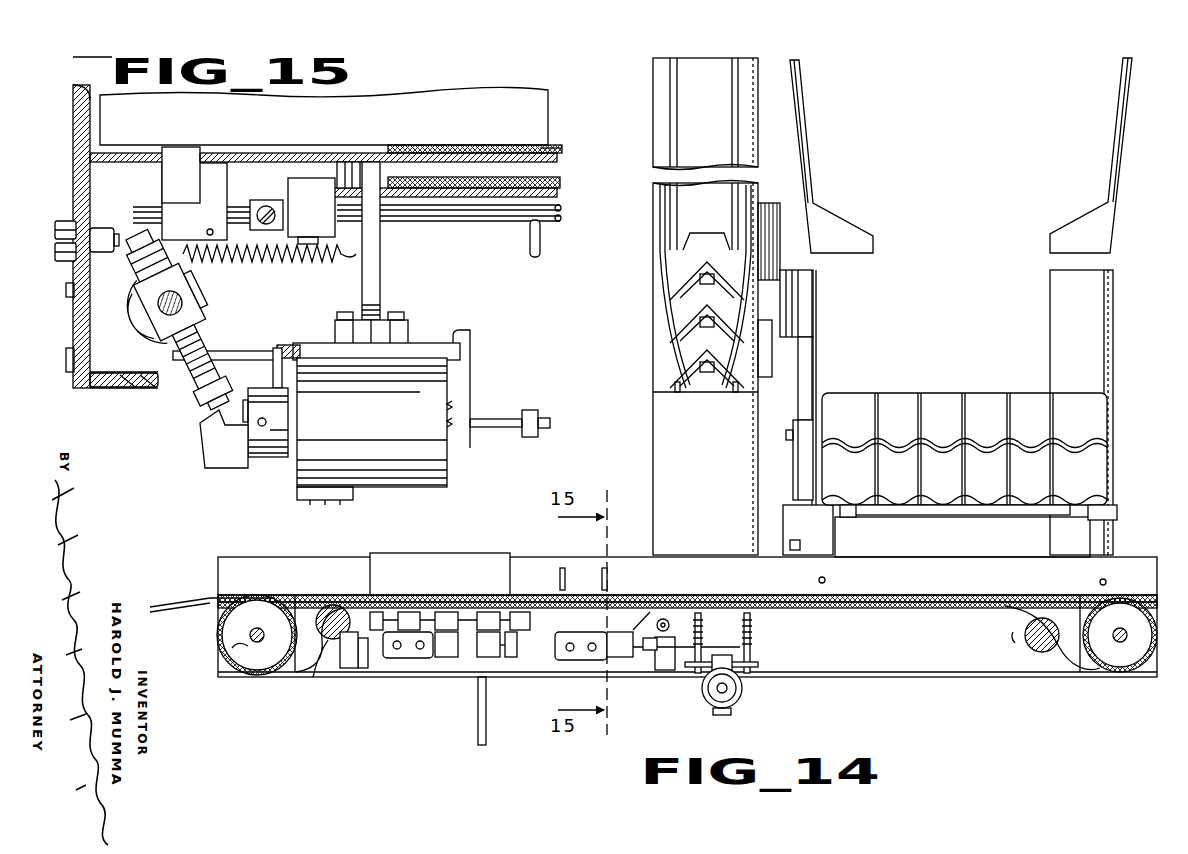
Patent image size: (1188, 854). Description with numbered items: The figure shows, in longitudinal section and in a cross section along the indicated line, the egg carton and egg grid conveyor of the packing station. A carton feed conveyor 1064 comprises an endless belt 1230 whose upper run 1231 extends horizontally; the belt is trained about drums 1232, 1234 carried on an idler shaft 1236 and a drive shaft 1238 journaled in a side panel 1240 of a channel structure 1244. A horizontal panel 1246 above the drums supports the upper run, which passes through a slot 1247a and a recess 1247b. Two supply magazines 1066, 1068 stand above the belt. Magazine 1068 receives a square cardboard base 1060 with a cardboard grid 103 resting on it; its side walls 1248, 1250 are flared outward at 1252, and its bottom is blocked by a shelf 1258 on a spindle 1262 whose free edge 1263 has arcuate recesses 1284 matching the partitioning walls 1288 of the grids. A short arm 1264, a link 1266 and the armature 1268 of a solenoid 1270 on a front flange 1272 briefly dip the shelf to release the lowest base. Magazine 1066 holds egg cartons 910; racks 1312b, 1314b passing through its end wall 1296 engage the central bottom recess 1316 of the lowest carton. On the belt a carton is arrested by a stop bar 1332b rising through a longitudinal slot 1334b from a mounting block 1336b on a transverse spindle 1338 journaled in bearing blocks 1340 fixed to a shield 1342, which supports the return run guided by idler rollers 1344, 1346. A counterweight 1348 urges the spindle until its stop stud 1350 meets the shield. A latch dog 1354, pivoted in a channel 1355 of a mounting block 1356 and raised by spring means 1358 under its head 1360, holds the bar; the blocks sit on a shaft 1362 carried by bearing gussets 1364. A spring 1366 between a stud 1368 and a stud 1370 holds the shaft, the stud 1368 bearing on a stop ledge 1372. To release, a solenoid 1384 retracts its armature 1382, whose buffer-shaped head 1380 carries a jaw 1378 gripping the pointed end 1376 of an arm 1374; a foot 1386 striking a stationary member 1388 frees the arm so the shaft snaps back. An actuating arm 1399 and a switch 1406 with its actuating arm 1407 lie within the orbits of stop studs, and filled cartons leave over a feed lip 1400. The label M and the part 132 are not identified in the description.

In FIG. 14, the cardboard grid 103 is at (932, 465).
In FIG. 15, the conveyor frame 132 is at (516, 103).
In FIG. 14, the conveyor frame 132 is at (290, 682).
In FIG. 15, the egg carton 910 is at (326, 114).
In FIG. 14, the egg carton 910 is at (670, 252).
In FIG. 14, the cardboard base 1060 is at (1040, 462).
In FIG. 15, the carton feed conveyor 1064 is at (560, 158).
In FIG. 14, the carton feed conveyor 1064 is at (337, 600).
In FIG. 14, the supply magazine 1066 is at (655, 232).
In FIG. 14, the supply magazine 1068 is at (1075, 284).
In FIG. 15, the endless belt 1230 is at (542, 148).
In FIG. 14, the endless belt 1230 is at (225, 622).
In FIG. 15, the upper run 1231 is at (480, 150).
In FIG. 14, the upper run 1231 is at (342, 594).
In FIG. 14, the drum 1232 is at (1140, 650).
In FIG. 14, the drum 1234 is at (238, 655).
In FIG. 14, the idler shaft 1236 is at (1118, 642).
In FIG. 14, the drive shaft 1238 is at (250, 636).
In FIG. 15, the side panel 1240 is at (80, 328).
In FIG. 14, the side panel 1240 is at (952, 655).
In FIG. 15, the channel structure 1244 is at (86, 382).
In FIG. 14, the channel structure 1244 is at (990, 676).
In FIG. 15, the horizontal panel 1246 is at (302, 158).
In FIG. 14, the horizontal panel 1246 is at (703, 598).
In FIG. 14, the slot 1247a is at (240, 598).
In FIG. 14, the recess 1247b is at (1152, 610).
In FIG. 14, the side wall 1248 is at (812, 368).
In FIG. 14, the side wall 1250 is at (1108, 365).
In FIG. 14, the flared upper ends 1252 is at (1120, 118).
In FIG. 14, the shelf 1258 is at (986, 512).
In FIG. 14, the spindle 1262 is at (848, 515).
In FIG. 14, the free edge 1263 is at (925, 520).
In FIG. 14, the short arm 1264 is at (783, 527).
In FIG. 14, the link 1266 is at (793, 474).
In FIG. 14, the armature 1268 is at (805, 345).
In FIG. 14, the solenoid 1270 is at (802, 290).
In FIG. 14, the front flange 1272 is at (868, 309).
In FIG. 14, the arcuate recesses 1284 is at (1000, 510).
In FIG. 14, the partitioning walls 1288 is at (1085, 485).
In FIG. 14, the end wall 1296 is at (730, 213).
In FIG. 14, the upper rack 1312b is at (705, 320).
In FIG. 14, the lower rack 1314b is at (698, 366).
In FIG. 14, the central bottom recess 1316 is at (662, 328).
In FIG. 15, the stop bar 1332b is at (176, 152).
In FIG. 14, the stop bar 1332b is at (600, 568).
In FIG. 15, the longitudinal slot 1334b is at (205, 160).
In FIG. 15, the mounting block 1336b is at (224, 227).
In FIG. 15, the transverse spindle 1338 is at (480, 217).
In FIG. 14, the transverse spindle 1338 is at (495, 625).
In FIG. 15, the bearing block 1340 is at (336, 220).
In FIG. 14, the bearing block 1340 is at (530, 640).
In FIG. 15, the shield 1342 is at (560, 183).
In FIG. 14, the shield 1342 is at (897, 604).
In FIG. 14, the idler roller 1344 is at (1025, 636).
In FIG. 14, the idler roller 1346 is at (324, 660).
In FIG. 15, the counterweight 1348 is at (262, 204).
In FIG. 15, the stop stud 1350 is at (530, 244).
In FIG. 14, the stop stud 1350 is at (542, 655).
In FIG. 15, the latch dog 1354 is at (150, 268).
In FIG. 15, the channel 1355 is at (148, 285).
In FIG. 15, the mounting block 1356 is at (178, 318).
In FIG. 14, the mounting block 1356 is at (614, 660).
In FIG. 15, the spring means 1358 is at (152, 300).
In FIG. 15, the head 1360 is at (192, 260).
In FIG. 15, the shaft 1362 is at (163, 310).
In FIG. 14, the shaft 1362 is at (372, 658).
In FIG. 14, the bearing gusset 1364 is at (357, 668).
In FIG. 15, the spring 1366 is at (285, 258).
In FIG. 15, the stud 1368 is at (150, 248).
In FIG. 15, the stud 1370 is at (378, 272).
In FIG. 14, the stud 1370 is at (708, 662).
In FIG. 15, the stop ledge 1372 is at (160, 380).
In FIG. 14, the stop ledge 1372 is at (812, 673).
In FIG. 15, the arm 1374 is at (205, 350).
In FIG. 15, the pointed end 1376 is at (210, 405).
In FIG. 15, the jaw 1378 is at (225, 463).
In FIG. 15, the buffer-shaped head 1380 is at (287, 460).
In FIG. 15, the armature 1382 is at (290, 412).
In FIG. 15, the solenoid 1384 is at (385, 465).
In FIG. 15, the foot 1386 is at (288, 346).
In FIG. 15, the stationary member 1388 is at (300, 362).
In FIG. 14, the actuating arm 1399 is at (612, 650).
In FIG. 14, the feed lip 1400 is at (207, 603).
In FIG. 14, the switch 1406 is at (482, 650).
In FIG. 14, the actuating arm 1407 is at (372, 665).
In FIG. 15, the machine M is at (518, 143).
In FIG. 14, the machine M is at (228, 556).